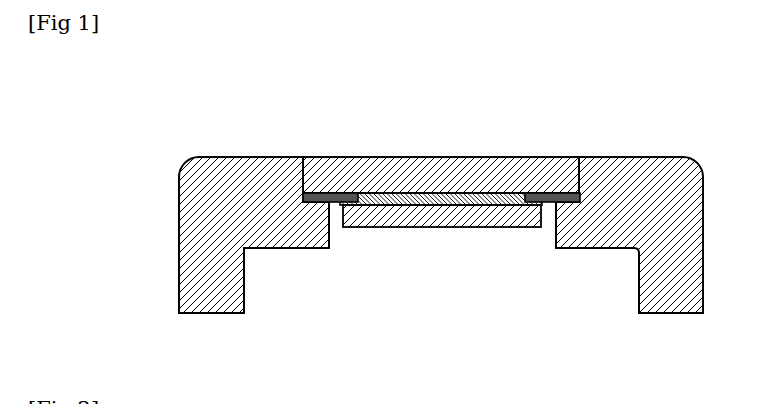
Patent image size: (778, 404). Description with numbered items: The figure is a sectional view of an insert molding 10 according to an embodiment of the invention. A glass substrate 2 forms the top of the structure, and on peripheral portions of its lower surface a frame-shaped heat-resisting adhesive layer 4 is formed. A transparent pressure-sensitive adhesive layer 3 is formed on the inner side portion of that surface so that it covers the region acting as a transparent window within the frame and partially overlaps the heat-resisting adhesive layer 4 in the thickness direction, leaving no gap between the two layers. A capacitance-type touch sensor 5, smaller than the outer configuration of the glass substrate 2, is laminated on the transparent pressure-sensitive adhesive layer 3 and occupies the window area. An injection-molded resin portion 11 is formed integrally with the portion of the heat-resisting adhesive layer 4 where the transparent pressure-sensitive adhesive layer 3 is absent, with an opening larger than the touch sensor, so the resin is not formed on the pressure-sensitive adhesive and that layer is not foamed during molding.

The insert molding 10 is at (585, 121).
The injection-molded resin portion 11 is at (670, 298).
The glass substrate 2 is at (461, 167).
The transparent pressure-sensitive adhesive layer 3 is at (486, 198).
The heat-resisting adhesive layer 4 is at (333, 203).
The capacitance-type touch sensor 5 is at (449, 221).